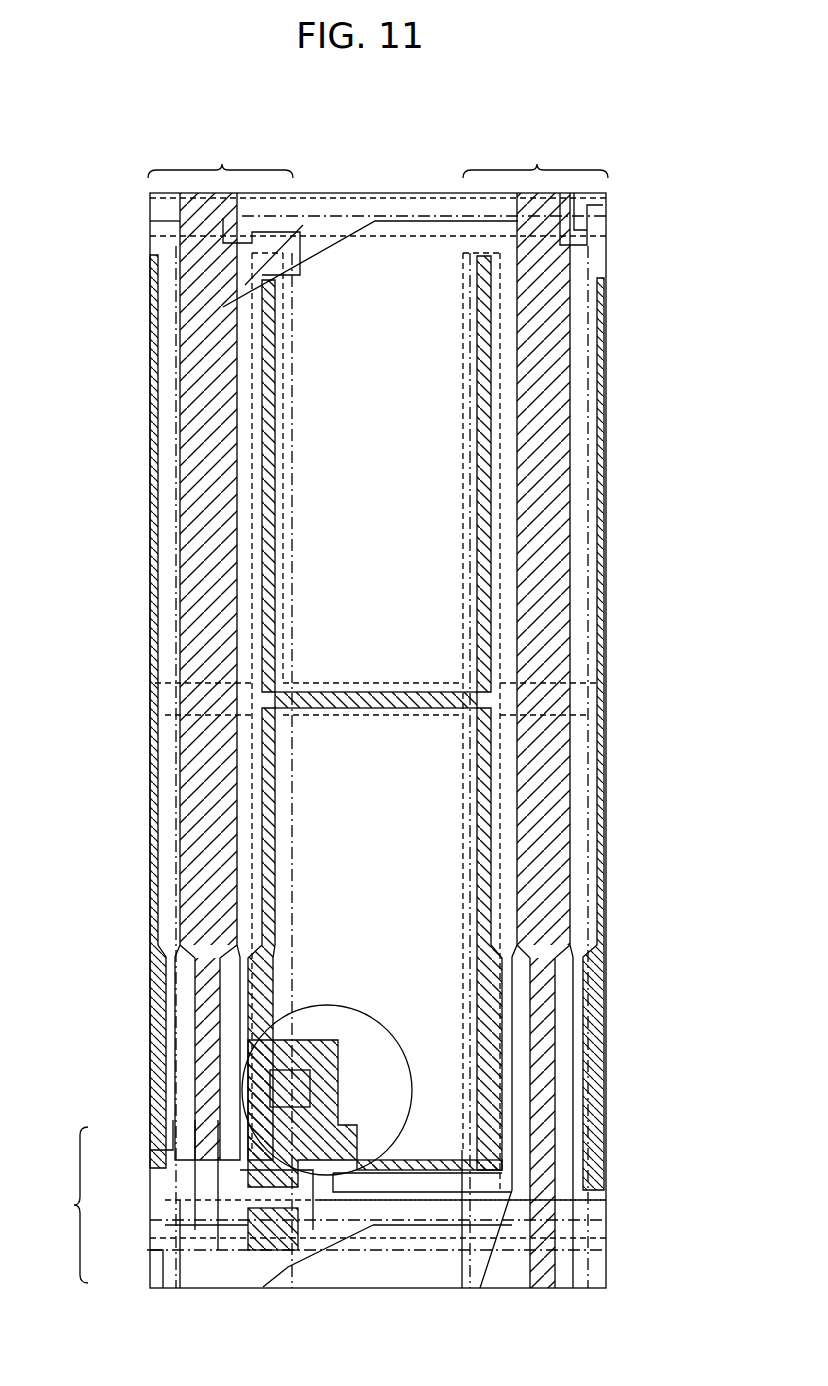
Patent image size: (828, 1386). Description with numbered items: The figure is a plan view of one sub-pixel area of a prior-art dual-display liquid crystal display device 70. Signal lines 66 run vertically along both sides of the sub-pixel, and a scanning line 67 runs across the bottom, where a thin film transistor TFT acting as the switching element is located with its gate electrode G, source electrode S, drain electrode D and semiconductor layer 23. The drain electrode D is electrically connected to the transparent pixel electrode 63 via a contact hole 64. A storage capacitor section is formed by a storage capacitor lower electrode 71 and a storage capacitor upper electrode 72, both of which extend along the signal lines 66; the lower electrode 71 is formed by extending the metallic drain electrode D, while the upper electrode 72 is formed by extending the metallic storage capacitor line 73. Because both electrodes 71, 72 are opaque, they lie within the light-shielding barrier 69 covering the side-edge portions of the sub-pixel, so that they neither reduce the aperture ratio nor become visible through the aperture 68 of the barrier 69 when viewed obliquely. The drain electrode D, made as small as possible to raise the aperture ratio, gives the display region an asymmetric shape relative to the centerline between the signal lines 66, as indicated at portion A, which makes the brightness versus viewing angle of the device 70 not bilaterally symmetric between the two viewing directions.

The dual-display liquid crystal display device 70 is at (273, 108).
The barrier 69 is at (378, 665).
The aperture 68 is at (400, 258).
The pixel electrode 63 is at (425, 335).
The signal line 66 is at (205, 370).
The storage capacitor lower electrode 71 is at (260, 640).
The storage capacitor line 73 is at (583, 705).
The storage capacitor upper electrode 72 is at (265, 800).
The contact hole 64 is at (290, 1088).
The portion A is at (330, 1005).
The drain electrode D is at (240, 1165).
The semiconductor layer 23 is at (240, 1190).
The gate electrode G is at (240, 1222).
The source electrode S is at (265, 1245).
The thin film transistor TFT is at (58, 1205).
The scanning line 67 is at (483, 1210).